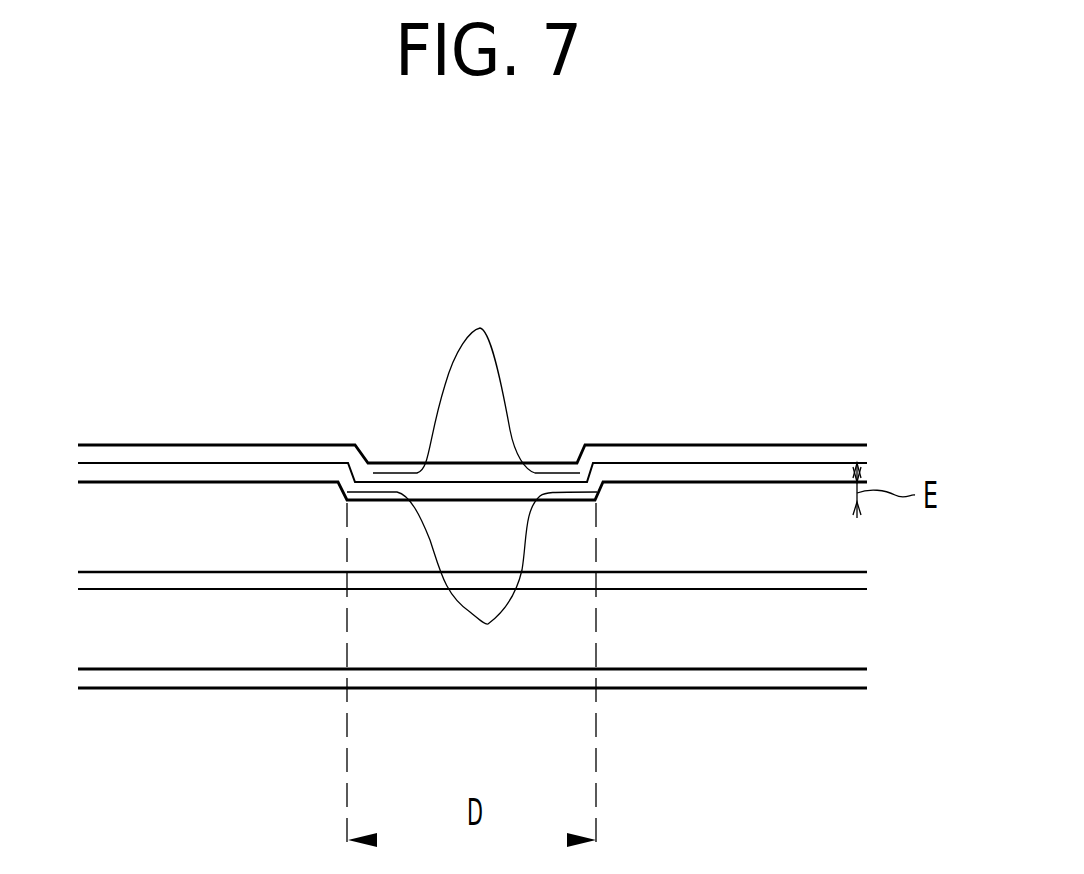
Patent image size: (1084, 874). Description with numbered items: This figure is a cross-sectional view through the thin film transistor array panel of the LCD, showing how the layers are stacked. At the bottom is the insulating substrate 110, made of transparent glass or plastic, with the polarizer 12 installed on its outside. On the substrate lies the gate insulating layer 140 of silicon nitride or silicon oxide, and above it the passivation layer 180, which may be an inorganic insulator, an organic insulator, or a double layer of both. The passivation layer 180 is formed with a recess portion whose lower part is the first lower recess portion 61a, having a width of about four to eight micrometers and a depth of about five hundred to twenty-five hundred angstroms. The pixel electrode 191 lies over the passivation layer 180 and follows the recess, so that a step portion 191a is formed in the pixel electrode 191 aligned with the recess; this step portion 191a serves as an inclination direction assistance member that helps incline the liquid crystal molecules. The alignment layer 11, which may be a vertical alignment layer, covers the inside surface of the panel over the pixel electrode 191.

The alignment layer 11 is at (673, 455).
The pixel electrode 191 is at (752, 475).
The step portion 191a is at (476, 380).
The first lower recess portion 61a is at (472, 579).
The passivation layer 180 is at (758, 547).
The gate insulating layer 140 is at (110, 580).
The insulating substrate 110 is at (205, 640).
The polarizer 12 is at (285, 678).